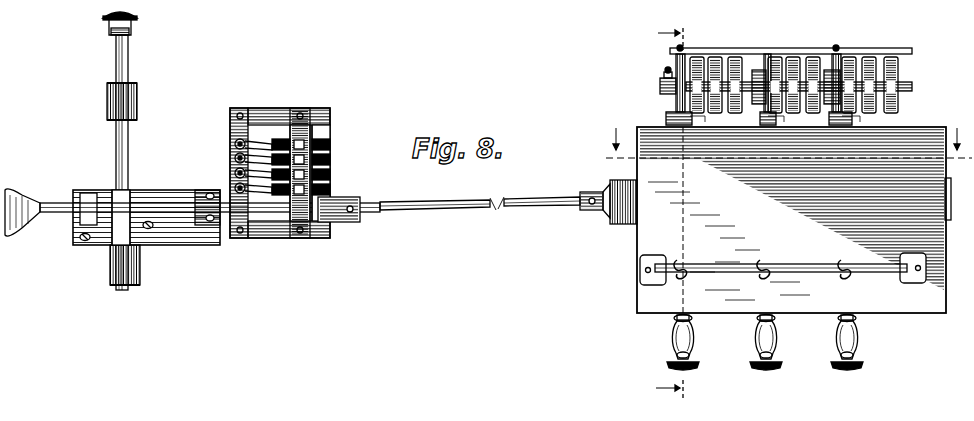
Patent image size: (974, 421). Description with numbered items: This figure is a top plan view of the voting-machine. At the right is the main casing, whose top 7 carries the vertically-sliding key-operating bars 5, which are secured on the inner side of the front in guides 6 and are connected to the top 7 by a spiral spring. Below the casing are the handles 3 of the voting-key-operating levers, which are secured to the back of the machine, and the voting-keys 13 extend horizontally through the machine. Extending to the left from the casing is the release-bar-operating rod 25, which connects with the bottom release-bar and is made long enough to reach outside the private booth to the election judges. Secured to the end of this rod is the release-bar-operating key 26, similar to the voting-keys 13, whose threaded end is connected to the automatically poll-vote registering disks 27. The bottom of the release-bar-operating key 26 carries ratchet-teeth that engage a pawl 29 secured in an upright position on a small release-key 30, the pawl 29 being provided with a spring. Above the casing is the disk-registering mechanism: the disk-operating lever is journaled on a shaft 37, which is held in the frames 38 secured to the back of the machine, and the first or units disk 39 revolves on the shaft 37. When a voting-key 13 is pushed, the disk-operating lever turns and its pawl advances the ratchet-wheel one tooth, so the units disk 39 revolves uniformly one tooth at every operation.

The handle 3 is at (694, 350).
The vertically-sliding key-operating bar 5 is at (672, 213).
The guide 6 is at (780, 149).
The top 7 is at (790, 196).
The voting-key 13 is at (690, 372).
The release-bar-operating rod 25 is at (530, 207).
The release-bar-operating key 26 is at (244, 238).
The poll-vote registering disk 27 is at (295, 173).
The pawl 29 is at (135, 195).
The release-key 30 is at (130, 150).
The shaft 37 is at (660, 87).
The frame 38 is at (676, 98).
The units disk 39 is at (706, 60).